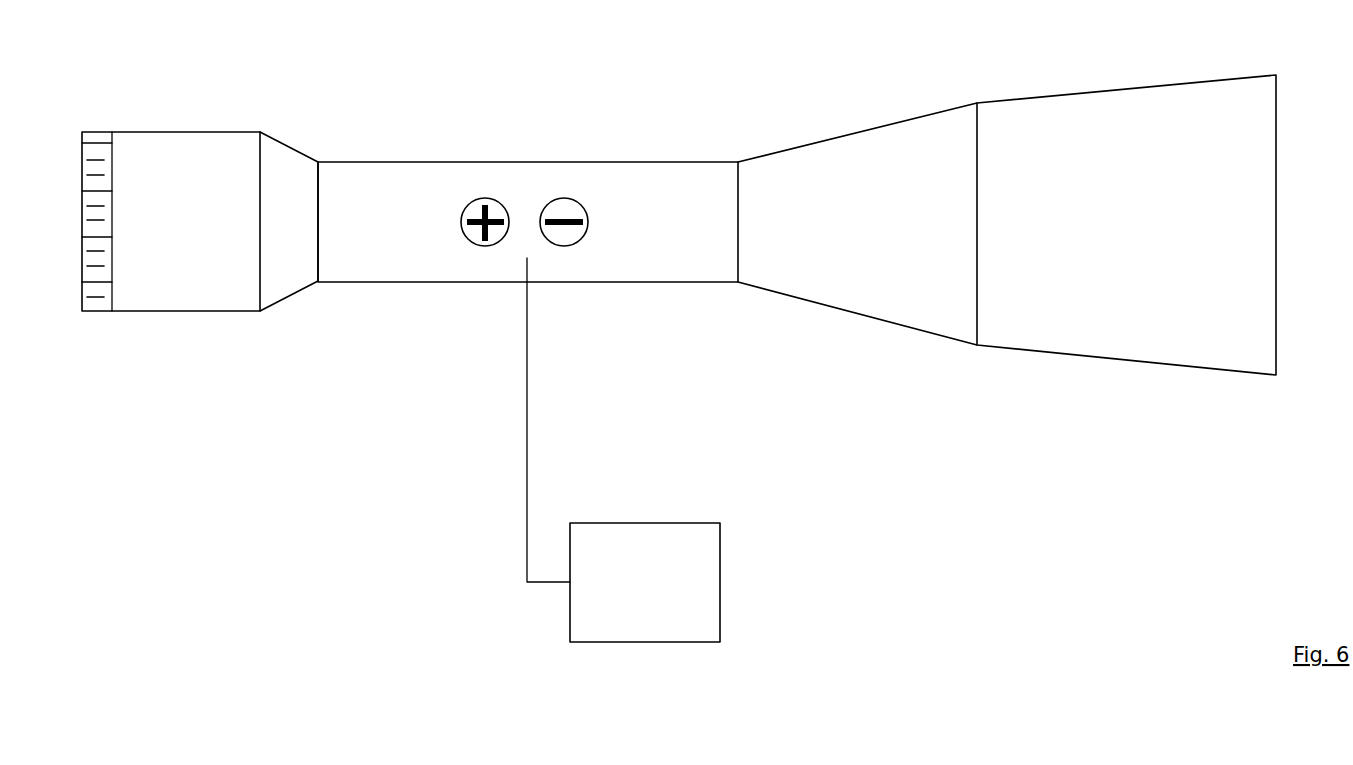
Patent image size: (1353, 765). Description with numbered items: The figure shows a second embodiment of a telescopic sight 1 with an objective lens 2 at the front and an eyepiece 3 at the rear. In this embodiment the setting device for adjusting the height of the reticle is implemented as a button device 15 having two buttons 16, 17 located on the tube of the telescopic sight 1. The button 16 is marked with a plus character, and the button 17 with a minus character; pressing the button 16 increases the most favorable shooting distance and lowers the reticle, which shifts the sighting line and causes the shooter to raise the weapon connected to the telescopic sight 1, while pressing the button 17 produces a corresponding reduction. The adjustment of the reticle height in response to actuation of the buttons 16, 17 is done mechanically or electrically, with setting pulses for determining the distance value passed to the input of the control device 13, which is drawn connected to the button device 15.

The telescopic sight 1 is at (620, 160).
The objective lens 2 is at (1186, 122).
The eyepiece 3 is at (197, 158).
The control device 13 is at (698, 574).
The button device 15 is at (528, 177).
The button 16 is at (470, 243).
The button 17 is at (572, 236).